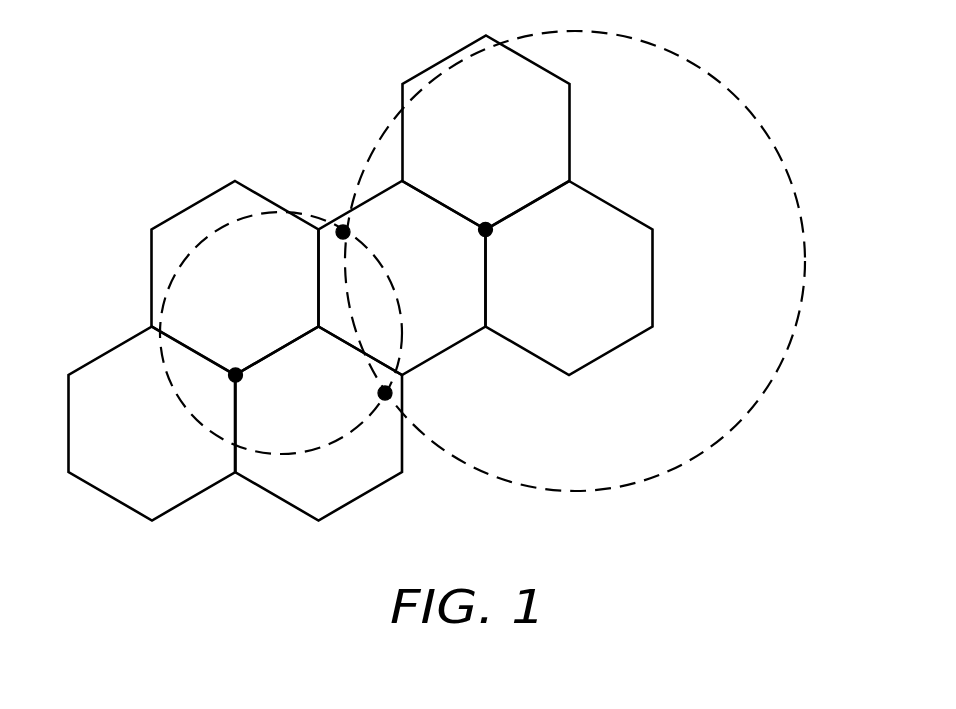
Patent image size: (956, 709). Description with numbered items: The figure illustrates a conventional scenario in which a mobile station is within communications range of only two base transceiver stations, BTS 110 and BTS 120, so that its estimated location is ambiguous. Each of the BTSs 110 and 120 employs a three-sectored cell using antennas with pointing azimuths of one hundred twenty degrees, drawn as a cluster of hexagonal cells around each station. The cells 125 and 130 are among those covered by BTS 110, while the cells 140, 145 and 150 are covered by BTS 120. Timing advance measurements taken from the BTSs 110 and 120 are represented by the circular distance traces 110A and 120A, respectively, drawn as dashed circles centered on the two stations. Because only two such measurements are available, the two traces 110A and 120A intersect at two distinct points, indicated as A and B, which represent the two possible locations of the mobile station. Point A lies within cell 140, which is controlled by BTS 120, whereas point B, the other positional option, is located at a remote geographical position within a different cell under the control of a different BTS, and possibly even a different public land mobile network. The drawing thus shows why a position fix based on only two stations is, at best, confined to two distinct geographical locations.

The base transceiver station 110 is at (236, 375).
The circular distance trace 110A is at (357, 497).
The base transceiver station 120 is at (486, 230).
The circular distance trace 120A is at (737, 420).
The cell 125 is at (197, 203).
The cell 130 is at (112, 350).
The cell 140 is at (433, 358).
The cell 145 is at (570, 118).
The cell 150 is at (652, 272).
The intersection point A is at (343, 232).
The intersection point B is at (380, 394).